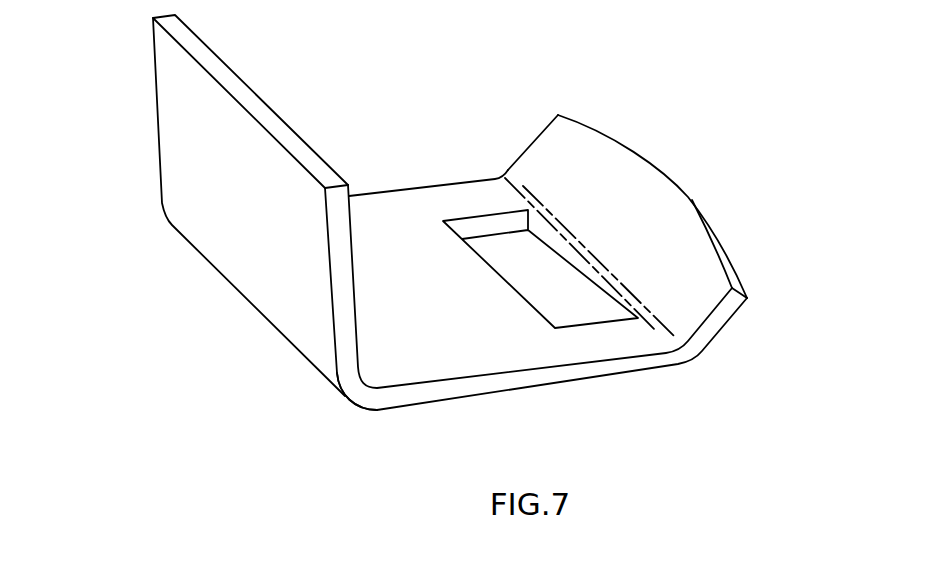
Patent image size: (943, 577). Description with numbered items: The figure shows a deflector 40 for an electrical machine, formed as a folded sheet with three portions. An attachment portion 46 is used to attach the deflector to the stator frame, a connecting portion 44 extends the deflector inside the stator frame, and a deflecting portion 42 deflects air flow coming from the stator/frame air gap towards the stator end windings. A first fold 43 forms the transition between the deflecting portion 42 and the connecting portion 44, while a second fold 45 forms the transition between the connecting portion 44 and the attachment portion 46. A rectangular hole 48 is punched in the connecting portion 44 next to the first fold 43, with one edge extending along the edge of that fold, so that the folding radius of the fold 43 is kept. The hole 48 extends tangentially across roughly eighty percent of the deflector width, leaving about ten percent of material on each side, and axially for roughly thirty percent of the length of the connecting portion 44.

The deflector 40 is at (383, 112).
The deflecting portion 42 is at (727, 308).
The first fold 43 is at (683, 360).
The connecting portion 44 is at (573, 373).
The second fold 45 is at (357, 397).
The attachment portion 46 is at (197, 132).
The hole 48 is at (498, 268).